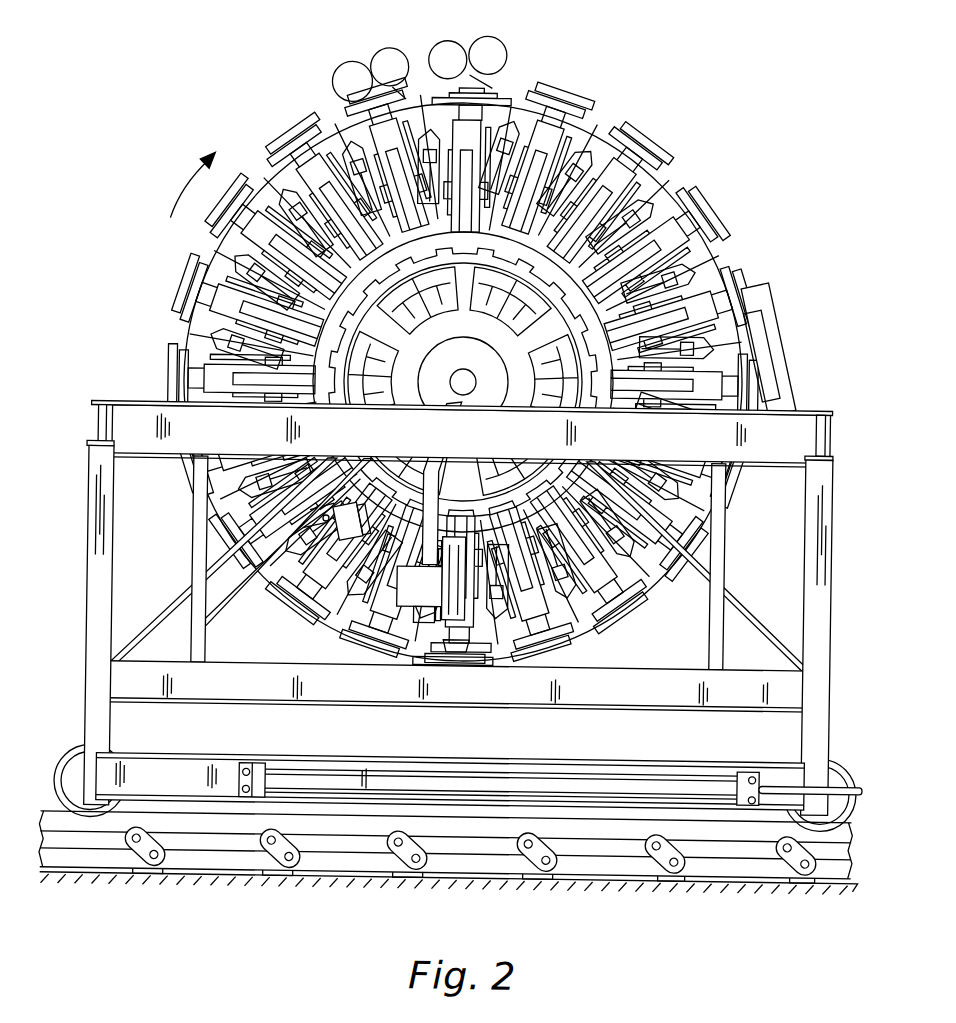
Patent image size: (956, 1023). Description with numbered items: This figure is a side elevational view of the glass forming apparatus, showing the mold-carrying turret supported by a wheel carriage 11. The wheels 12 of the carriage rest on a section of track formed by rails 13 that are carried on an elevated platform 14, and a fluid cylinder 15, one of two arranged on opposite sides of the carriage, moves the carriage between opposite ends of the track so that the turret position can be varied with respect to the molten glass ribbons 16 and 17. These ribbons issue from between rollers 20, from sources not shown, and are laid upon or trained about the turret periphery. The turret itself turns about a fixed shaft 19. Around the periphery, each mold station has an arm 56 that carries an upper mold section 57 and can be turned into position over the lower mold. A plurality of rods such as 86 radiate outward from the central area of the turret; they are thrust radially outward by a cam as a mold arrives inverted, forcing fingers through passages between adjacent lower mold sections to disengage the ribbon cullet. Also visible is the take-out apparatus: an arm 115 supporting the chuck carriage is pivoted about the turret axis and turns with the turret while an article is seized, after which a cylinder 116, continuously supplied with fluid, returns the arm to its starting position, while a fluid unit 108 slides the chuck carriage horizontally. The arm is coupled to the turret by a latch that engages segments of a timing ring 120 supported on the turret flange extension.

The wheel carriage 11 is at (88, 603).
The wheels 12 is at (67, 760).
The rails 13 is at (229, 817).
The elevated platform 14 is at (735, 855).
The fluid cylinder 15 is at (678, 772).
The molten glass ribbon 16 is at (457, 52).
The molten glass ribbon 17 is at (357, 63).
The fixed shaft 19 is at (471, 396).
The rollers 20 is at (394, 50).
The arm 56 is at (648, 148).
The upper mold section 57 is at (660, 174).
The rod 86 is at (395, 172).
The fluid unit 108 is at (445, 600).
The arm 115 is at (427, 418).
The cylinder 116 is at (340, 492).
The timing ring 120 is at (428, 242).